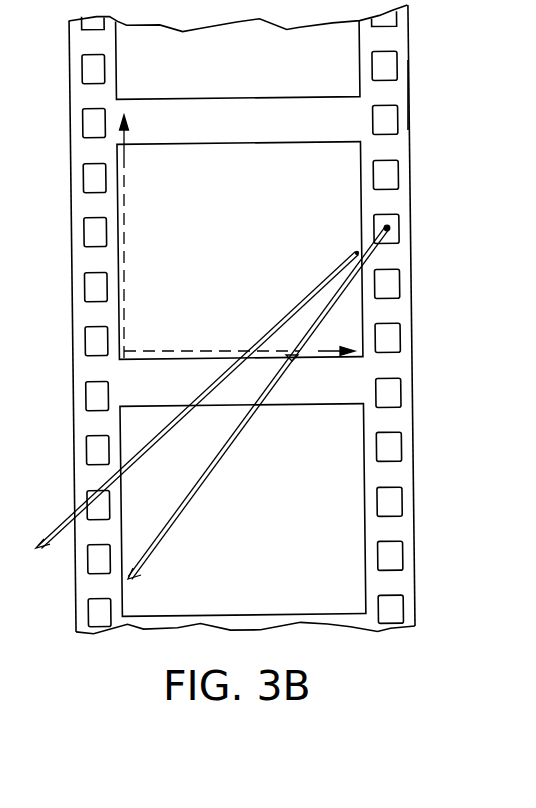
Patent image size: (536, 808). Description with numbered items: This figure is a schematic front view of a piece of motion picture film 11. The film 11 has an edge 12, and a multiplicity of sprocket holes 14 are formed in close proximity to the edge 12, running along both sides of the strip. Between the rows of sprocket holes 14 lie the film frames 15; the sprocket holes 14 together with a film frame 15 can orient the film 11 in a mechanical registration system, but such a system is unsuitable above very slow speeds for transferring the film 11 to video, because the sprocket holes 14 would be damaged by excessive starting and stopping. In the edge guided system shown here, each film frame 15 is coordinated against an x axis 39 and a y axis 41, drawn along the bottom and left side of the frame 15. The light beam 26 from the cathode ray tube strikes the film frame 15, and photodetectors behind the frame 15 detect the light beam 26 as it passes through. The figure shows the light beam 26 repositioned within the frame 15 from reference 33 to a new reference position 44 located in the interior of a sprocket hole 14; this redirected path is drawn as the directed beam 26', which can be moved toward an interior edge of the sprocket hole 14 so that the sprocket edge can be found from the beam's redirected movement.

The motion picture film 11 is at (408, 661).
The edge 12 is at (408, 97).
The sprocket hole 14 is at (397, 128).
The film frame 15 is at (248, 143).
The light beam 26 is at (197, 399).
The directed beam 26' is at (258, 403).
The reference 33 is at (357, 254).
The x axis 39 is at (292, 357).
The y axis 41 is at (125, 271).
The new reference position 44 is at (389, 226).